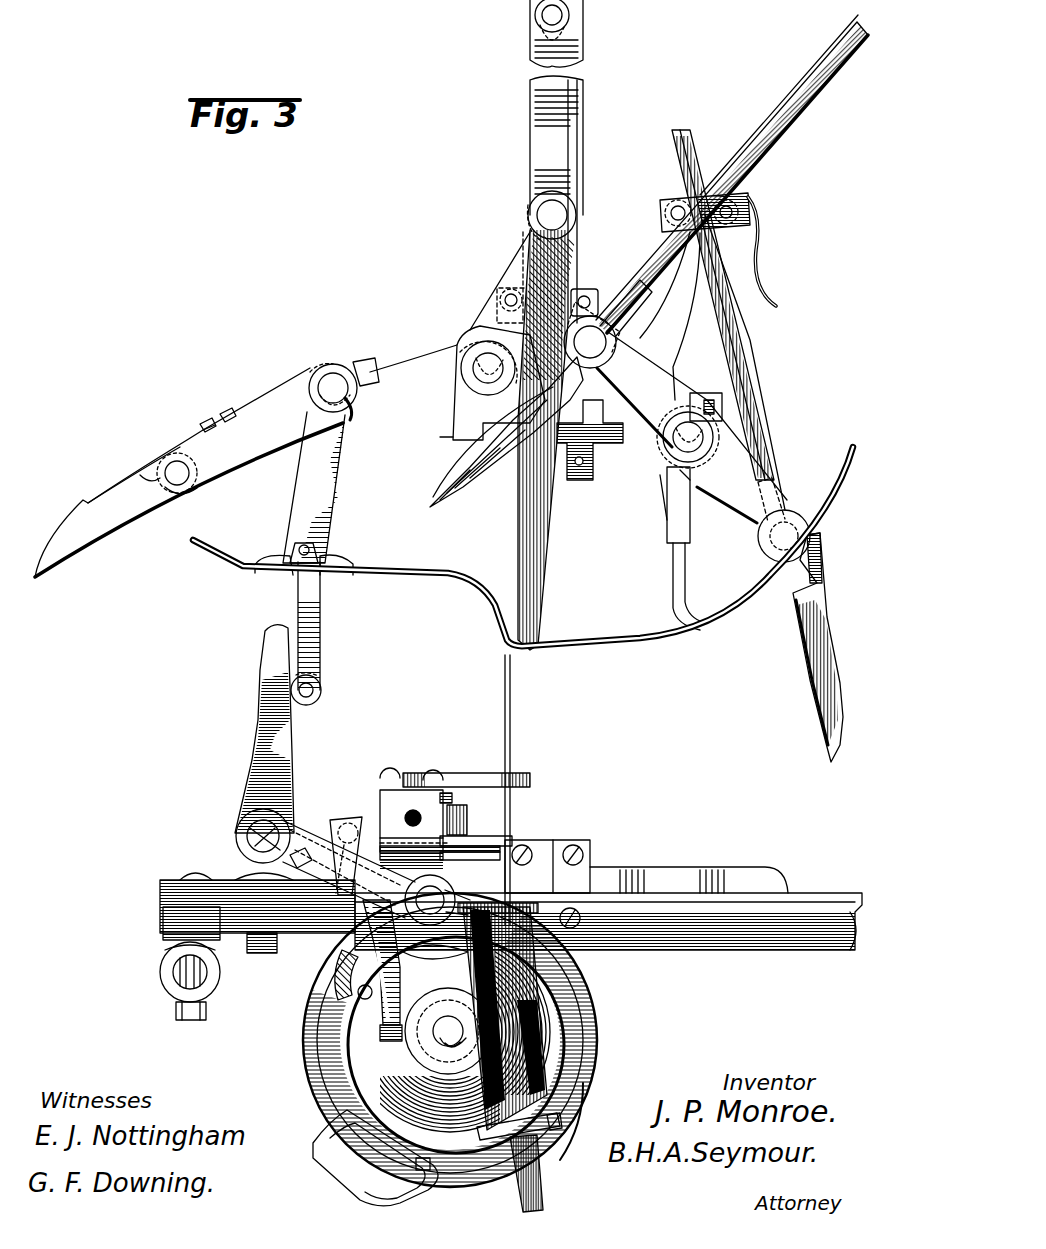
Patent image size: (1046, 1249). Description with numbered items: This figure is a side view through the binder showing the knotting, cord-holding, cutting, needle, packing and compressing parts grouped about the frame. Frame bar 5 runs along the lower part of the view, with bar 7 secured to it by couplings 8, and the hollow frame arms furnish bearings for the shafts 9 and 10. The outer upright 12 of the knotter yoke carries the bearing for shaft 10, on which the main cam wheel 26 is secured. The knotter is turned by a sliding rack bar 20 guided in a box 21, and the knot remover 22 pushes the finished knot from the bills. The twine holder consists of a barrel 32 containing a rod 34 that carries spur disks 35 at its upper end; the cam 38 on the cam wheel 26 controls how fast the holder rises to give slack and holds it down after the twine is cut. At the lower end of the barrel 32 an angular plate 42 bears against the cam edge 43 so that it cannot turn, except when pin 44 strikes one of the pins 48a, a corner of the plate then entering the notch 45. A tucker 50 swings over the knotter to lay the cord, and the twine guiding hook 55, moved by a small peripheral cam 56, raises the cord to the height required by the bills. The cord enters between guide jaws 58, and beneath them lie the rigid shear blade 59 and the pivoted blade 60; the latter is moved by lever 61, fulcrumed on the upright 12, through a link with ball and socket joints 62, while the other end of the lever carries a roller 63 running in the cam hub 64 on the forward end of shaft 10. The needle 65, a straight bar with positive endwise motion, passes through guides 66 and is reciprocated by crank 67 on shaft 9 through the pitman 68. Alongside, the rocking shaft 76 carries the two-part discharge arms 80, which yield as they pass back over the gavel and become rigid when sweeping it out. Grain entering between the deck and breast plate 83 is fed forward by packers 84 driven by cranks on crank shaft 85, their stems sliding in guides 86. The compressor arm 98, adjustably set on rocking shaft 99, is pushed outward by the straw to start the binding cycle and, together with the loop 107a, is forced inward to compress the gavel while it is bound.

The bar 5 is at (742, 948).
The bar 7 is at (212, 982).
The coupling 8 is at (165, 937).
The shaft 9 is at (474, 371).
The shaft 10 is at (448, 1031).
The upright 12 is at (414, 826).
The sliding rack bar 20 is at (689, 869).
The box 21 is at (547, 867).
The knot remover 22 is at (452, 797).
The cam wheel 26 is at (595, 1110).
The barrel 32 is at (527, 967).
The rod 34 is at (541, 1173).
The spur wheels 35 is at (435, 942).
The cam 38 is at (347, 1072).
The angular plate 42 is at (556, 1128).
The cam edge 43 is at (585, 1017).
The pin 44 is at (362, 998).
The notch 45 is at (348, 977).
The pin 48a is at (562, 1118).
The tucker 50 is at (466, 769).
The twine guiding hook 55 is at (462, 818).
The peripheral cam 56 is at (375, 1158).
The guide jaws 58 is at (513, 838).
The shear blade 59 is at (490, 840).
The shear blade 60 is at (487, 854).
The lever 61 is at (378, 933).
The ball and socket joints 62 is at (347, 825).
The anti-friction roller 63 is at (387, 1043).
The cam hub 64 is at (420, 1058).
The needle 65 is at (578, 178).
The guides 66 is at (628, 462).
The crank 67 is at (507, 267).
The pitman 68 is at (538, 143).
The rocking shaft 76 is at (333, 380).
The discharge arms 80 is at (189, 472).
The breast plate 83 is at (523, 546).
The packers 84 is at (810, 660).
The crank shaft 85 is at (700, 440).
The guides 86 is at (735, 203).
The compressor arm 98 is at (258, 729).
The rocking shaft 99 is at (245, 838).
The loop 107a is at (312, 627).